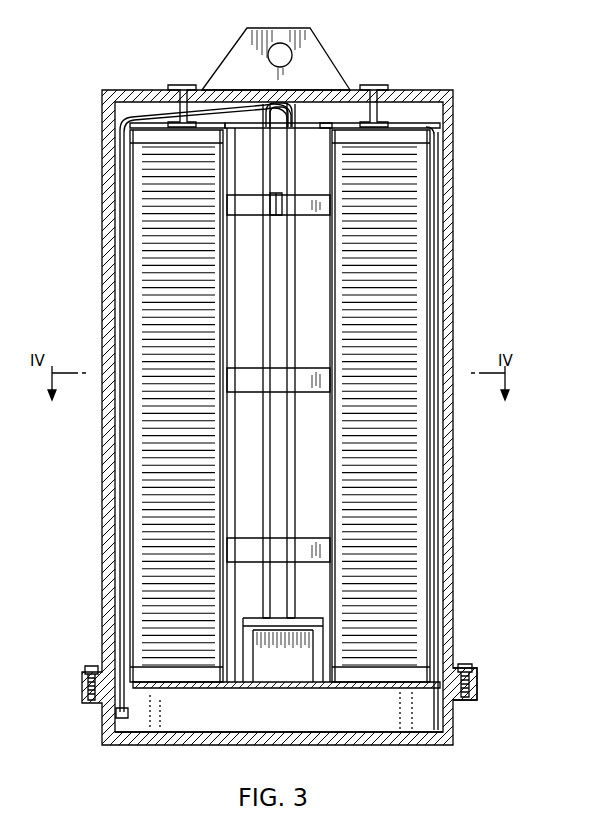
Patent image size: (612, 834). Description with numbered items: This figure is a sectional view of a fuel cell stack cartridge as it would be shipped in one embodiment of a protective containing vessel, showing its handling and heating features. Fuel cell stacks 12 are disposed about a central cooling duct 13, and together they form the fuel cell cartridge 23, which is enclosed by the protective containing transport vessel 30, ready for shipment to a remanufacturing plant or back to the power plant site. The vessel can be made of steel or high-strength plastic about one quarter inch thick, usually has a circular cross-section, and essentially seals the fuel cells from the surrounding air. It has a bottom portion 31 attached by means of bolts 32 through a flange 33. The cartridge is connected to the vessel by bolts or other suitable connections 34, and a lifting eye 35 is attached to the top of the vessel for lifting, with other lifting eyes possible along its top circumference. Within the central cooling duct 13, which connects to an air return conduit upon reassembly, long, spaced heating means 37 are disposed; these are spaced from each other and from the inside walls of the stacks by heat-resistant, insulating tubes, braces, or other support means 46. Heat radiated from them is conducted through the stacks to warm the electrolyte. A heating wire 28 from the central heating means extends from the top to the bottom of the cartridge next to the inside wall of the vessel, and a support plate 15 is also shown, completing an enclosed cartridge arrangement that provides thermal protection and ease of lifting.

The fuel cell stacks 12 is at (405, 238).
The central cooling duct 13 is at (248, 469).
The support plate 15 is at (172, 688).
The fuel cell cartridge 23 is at (153, 224).
The heating wire 28 is at (178, 97).
The protective containing transport vessel 30 is at (455, 120).
The bottom portion 31 is at (455, 722).
The bolts 32 is at (470, 668).
The flange 33 is at (477, 681).
The connections 34 is at (185, 84).
The lifting eye 35 is at (302, 60).
The heating means 37 is at (268, 289).
The support means 46 is at (276, 192).